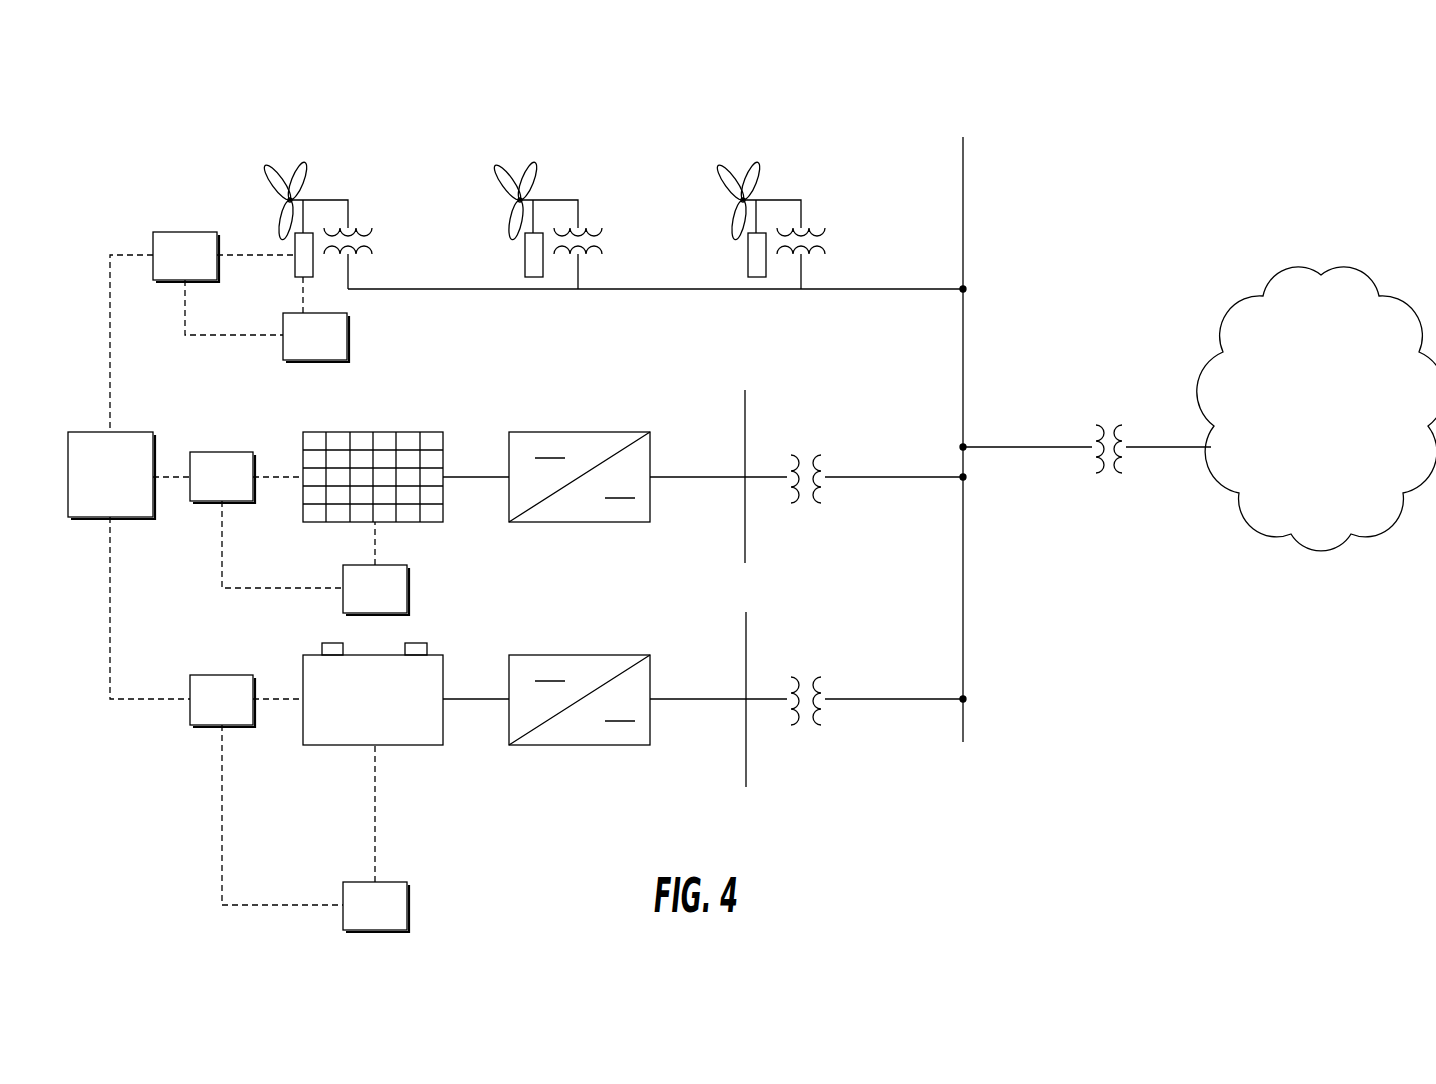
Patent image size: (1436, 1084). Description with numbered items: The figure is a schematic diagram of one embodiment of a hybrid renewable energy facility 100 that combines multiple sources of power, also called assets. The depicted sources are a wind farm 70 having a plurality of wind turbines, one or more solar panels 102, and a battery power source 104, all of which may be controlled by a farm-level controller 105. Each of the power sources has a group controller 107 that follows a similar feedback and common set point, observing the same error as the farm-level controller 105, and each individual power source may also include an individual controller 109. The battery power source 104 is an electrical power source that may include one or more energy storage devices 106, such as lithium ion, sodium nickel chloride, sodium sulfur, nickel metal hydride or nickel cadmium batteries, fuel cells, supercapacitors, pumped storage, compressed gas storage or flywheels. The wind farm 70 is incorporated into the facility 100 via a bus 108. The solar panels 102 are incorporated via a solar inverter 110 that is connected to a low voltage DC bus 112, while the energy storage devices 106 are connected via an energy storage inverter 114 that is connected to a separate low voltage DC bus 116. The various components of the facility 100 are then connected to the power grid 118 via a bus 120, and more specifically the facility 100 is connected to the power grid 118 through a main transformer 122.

The hybrid renewable energy facility 100 is at (214, 151).
The wind farm 70 is at (628, 151).
The solar panel 102 is at (385, 432).
The battery power source 104 is at (424, 630).
The farm-level controller 105 is at (92, 492).
The energy storage device 106 is at (342, 745).
The group controller 107 is at (167, 272).
The bus 108 is at (497, 290).
The individual controller 109 is at (297, 353).
The solar inverter 110 is at (577, 432).
The low voltage DC bus 112 is at (747, 417).
The energy storage inverter 114 is at (577, 655).
The low voltage DC bus 116 is at (747, 648).
The power grid 118 is at (1298, 468).
The bus 120 is at (963, 184).
The main transformer 122 is at (1110, 478).